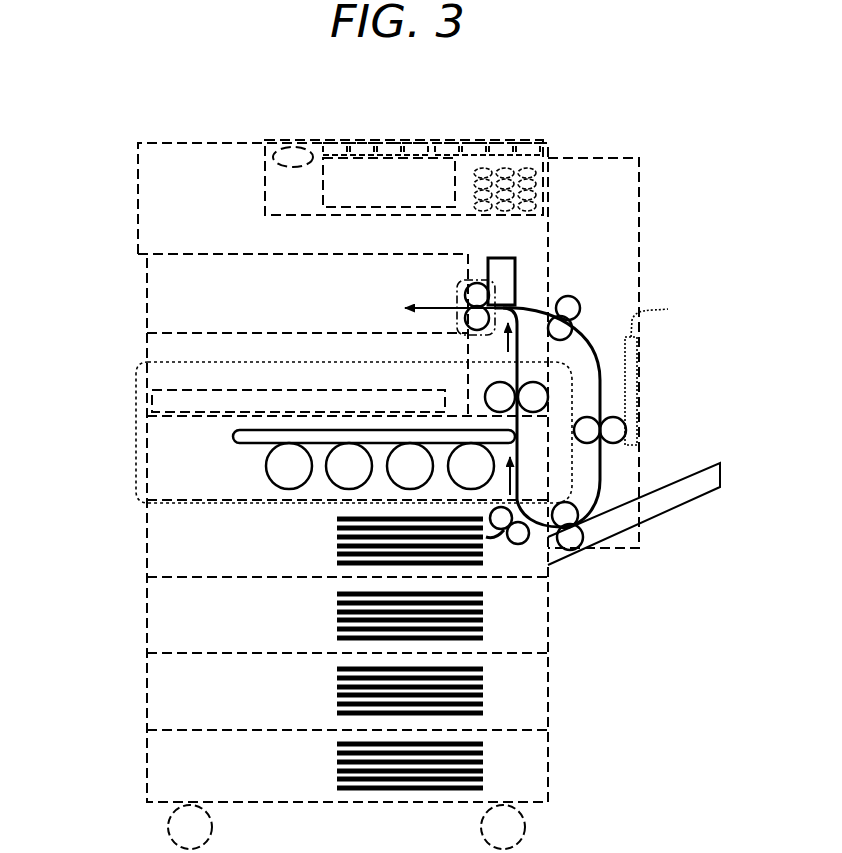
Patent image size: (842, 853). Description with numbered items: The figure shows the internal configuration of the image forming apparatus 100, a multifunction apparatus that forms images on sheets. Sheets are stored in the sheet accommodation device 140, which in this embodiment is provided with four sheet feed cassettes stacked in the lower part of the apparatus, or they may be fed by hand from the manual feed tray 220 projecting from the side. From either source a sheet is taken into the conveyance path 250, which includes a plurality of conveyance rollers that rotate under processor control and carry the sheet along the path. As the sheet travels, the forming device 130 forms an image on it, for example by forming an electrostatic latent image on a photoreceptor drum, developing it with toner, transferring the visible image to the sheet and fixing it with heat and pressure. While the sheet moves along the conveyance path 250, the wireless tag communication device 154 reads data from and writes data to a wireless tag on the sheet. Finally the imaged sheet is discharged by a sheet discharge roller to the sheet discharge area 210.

The image forming apparatus 100 is at (596, 110).
The sheet discharge area 210 is at (164, 282).
The forming device 130 is at (137, 437).
The sheet accommodation device 140 is at (140, 500).
The conveyance path 250 is at (517, 350).
The wireless tag communication device 154 is at (656, 365).
The manual feed tray 220 is at (690, 470).